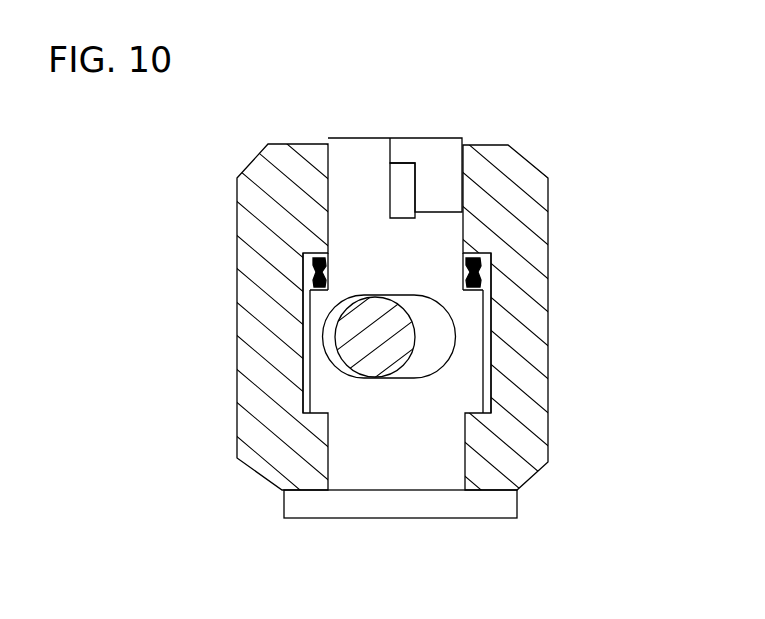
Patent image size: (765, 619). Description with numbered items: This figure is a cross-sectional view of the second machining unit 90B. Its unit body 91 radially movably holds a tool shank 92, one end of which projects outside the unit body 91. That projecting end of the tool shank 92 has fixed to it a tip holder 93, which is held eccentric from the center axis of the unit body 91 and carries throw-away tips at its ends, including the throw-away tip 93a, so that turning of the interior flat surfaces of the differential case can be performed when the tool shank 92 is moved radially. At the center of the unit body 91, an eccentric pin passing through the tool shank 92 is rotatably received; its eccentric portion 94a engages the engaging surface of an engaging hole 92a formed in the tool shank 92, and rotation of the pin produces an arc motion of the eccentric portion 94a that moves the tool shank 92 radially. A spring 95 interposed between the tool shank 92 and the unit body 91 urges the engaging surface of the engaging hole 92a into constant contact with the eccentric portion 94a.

The second machining unit 90B is at (548, 140).
The unit body 91 is at (262, 237).
The tool shank 92 is at (397, 468).
The engaging hole 92a is at (420, 295).
The tip holder 93 is at (433, 158).
The throw-away tip 93a is at (405, 182).
The eccentric portion 94a is at (353, 337).
The spring 95 is at (490, 258).